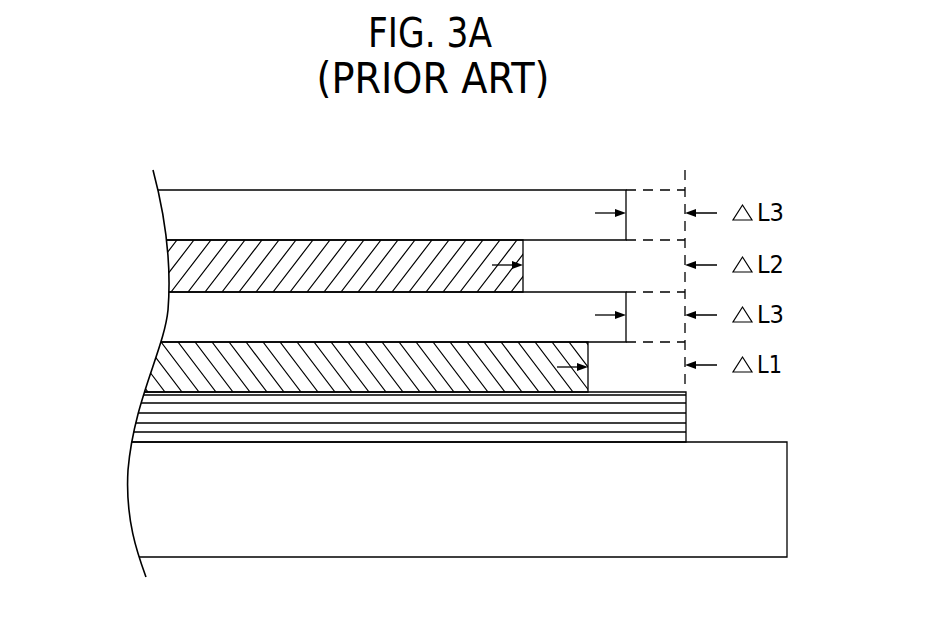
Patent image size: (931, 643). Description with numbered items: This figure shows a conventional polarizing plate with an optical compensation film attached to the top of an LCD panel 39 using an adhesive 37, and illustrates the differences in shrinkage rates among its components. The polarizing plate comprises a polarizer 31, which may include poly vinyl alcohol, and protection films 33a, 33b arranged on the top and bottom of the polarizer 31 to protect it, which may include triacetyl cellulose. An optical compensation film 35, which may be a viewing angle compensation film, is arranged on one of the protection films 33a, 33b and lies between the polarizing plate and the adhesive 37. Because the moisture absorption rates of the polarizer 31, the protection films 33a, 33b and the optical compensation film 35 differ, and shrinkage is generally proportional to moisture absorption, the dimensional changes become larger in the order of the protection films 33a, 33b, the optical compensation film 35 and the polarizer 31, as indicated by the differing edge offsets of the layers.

The protection film 33b is at (175, 213).
The polarizer 31 is at (170, 266).
The protection film 33a is at (175, 317).
The optical compensation film 35 is at (160, 369).
The adhesive 37 is at (148, 424).
The LCD panel 39 is at (140, 501).